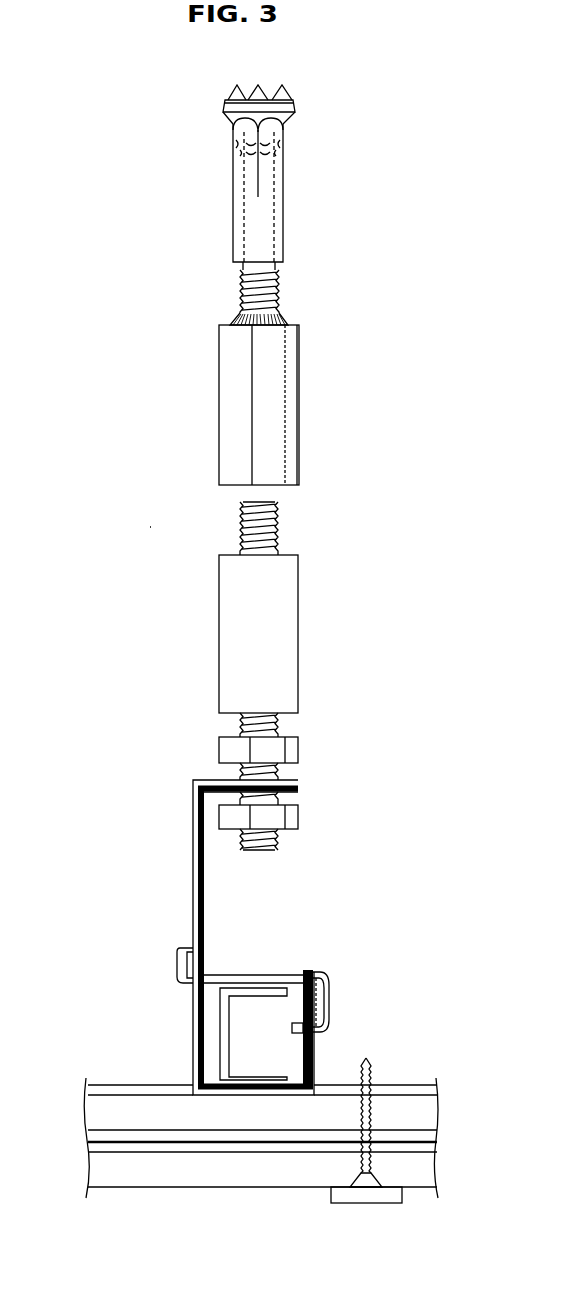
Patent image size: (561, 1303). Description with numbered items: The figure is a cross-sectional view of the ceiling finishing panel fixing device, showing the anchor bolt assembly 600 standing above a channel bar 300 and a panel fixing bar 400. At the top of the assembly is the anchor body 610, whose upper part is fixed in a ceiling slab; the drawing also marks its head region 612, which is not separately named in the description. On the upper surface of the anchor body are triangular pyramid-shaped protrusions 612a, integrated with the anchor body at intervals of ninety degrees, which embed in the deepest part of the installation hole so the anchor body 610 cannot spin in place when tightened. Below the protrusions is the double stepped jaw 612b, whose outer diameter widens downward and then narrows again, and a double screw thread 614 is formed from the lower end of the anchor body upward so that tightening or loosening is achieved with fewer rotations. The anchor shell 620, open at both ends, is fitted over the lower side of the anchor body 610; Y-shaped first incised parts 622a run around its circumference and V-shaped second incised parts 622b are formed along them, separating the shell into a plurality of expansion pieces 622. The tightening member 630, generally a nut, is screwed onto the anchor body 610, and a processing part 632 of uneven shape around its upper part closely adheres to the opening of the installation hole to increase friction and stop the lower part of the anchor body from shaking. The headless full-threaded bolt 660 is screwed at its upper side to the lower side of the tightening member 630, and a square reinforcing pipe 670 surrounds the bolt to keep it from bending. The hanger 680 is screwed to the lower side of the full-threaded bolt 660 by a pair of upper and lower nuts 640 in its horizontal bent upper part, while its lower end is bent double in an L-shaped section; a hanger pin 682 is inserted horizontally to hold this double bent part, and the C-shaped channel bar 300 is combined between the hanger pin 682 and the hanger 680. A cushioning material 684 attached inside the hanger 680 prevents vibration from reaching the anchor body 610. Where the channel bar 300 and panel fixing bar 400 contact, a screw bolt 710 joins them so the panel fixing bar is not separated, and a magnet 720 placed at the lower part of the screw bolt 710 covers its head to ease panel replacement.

The anchor bolt assembly 600 is at (138, 528).
The anchor body 610 is at (216, 101).
The anchor head plate 612 is at (293, 104).
The triangular pyramid-shaped protrusions 612a is at (258, 86).
The double stepped jaw 612b is at (291, 116).
The double screw thread 614 is at (292, 196).
The anchor shell 620 is at (224, 206).
The expansion pieces 622 is at (240, 131).
The first incised parts 622a is at (236, 120).
The second incised parts 622b is at (253, 160).
The tightening member 630 is at (283, 402).
The processing part 632 is at (232, 318).
The upper and lower nuts 640 is at (298, 817).
The full-threaded bolt 660 is at (280, 521).
The reinforcing pipe 670 is at (298, 624).
The hanger 680 is at (193, 880).
The hanger pin 682 is at (268, 975).
The cushioning material 684 is at (205, 900).
The channel bar 300 is at (225, 1048).
The panel fixing bar 400 is at (408, 1105).
The screw bolt 710 is at (378, 1178).
The magnet 720 is at (365, 1203).